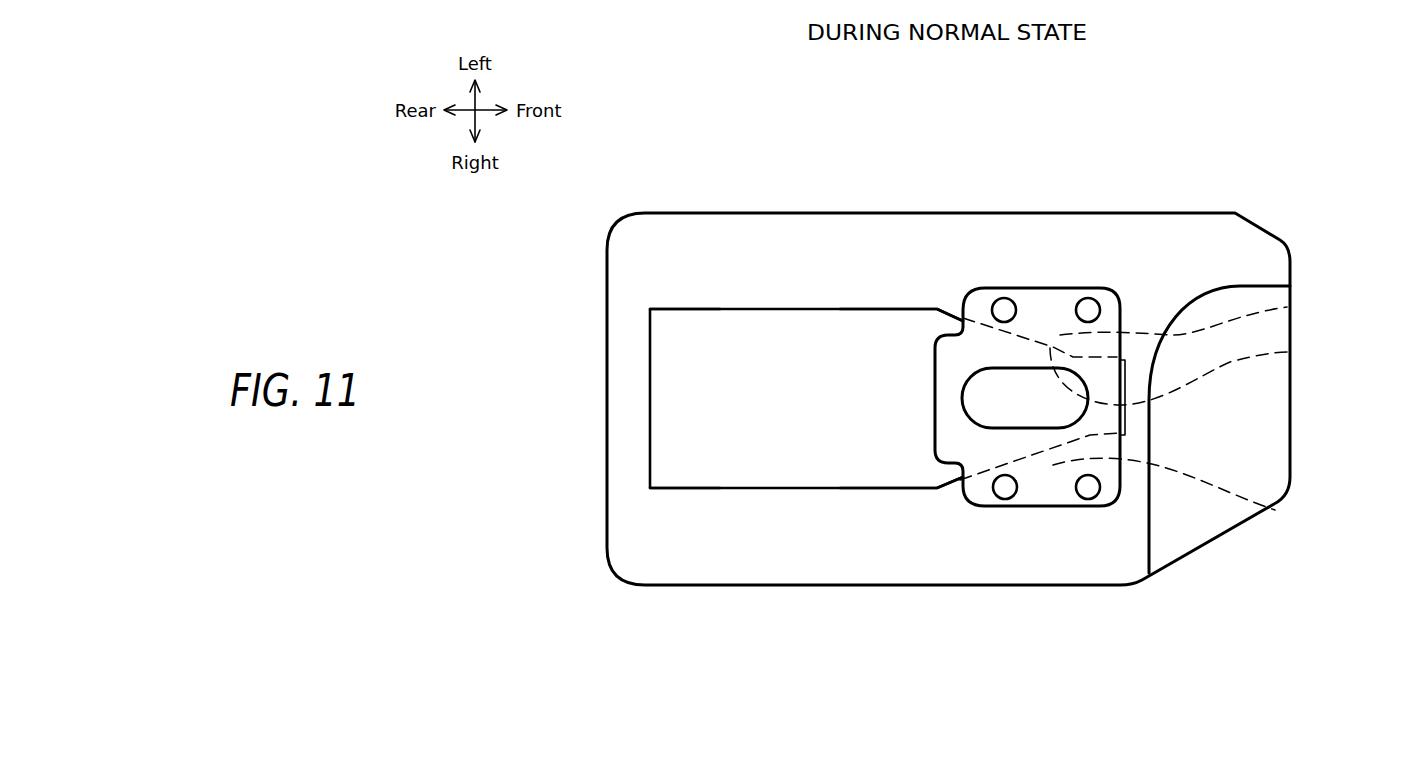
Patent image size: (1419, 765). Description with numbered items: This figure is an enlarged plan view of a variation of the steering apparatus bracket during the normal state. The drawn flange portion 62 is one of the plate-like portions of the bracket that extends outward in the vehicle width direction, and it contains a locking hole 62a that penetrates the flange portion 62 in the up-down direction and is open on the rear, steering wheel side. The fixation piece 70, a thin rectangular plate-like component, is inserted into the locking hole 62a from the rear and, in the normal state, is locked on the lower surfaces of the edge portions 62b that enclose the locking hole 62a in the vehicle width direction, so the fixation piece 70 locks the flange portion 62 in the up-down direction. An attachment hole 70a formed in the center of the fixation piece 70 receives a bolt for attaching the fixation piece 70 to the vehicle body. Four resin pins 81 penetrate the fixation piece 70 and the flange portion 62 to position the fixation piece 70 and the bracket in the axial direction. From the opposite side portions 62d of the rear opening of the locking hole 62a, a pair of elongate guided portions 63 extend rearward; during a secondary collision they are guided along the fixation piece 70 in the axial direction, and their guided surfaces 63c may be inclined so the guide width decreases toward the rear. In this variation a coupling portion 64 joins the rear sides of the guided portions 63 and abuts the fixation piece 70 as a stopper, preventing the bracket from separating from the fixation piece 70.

The flange portion 62 is at (1283, 602).
The locking hole 62a is at (1290, 352).
The edge portion 62b is at (1320, 515).
The side portion 62d is at (948, 257).
The guided portion 63 is at (620, 271).
The guided surface 63c is at (720, 310).
The coupling portion 64 is at (628, 393).
The fixation piece 70 is at (948, 382).
The attachment hole 70a is at (1000, 415).
The resin pin 81 is at (1004, 310).